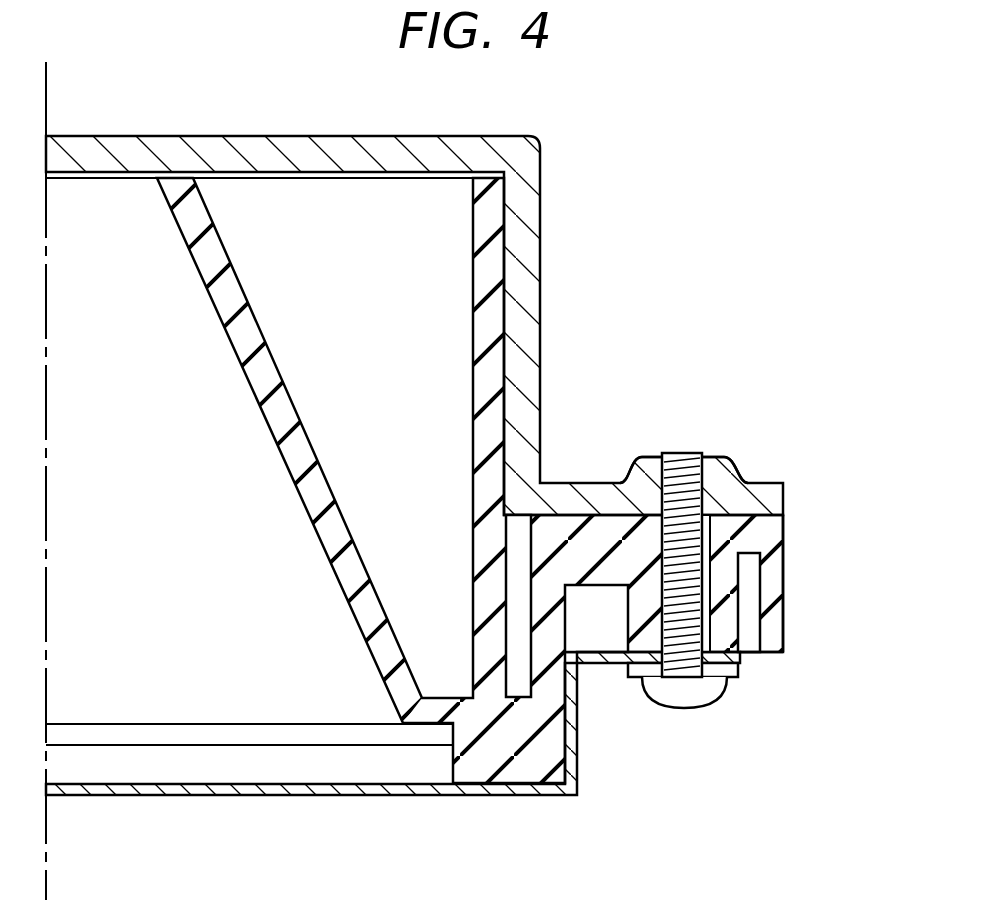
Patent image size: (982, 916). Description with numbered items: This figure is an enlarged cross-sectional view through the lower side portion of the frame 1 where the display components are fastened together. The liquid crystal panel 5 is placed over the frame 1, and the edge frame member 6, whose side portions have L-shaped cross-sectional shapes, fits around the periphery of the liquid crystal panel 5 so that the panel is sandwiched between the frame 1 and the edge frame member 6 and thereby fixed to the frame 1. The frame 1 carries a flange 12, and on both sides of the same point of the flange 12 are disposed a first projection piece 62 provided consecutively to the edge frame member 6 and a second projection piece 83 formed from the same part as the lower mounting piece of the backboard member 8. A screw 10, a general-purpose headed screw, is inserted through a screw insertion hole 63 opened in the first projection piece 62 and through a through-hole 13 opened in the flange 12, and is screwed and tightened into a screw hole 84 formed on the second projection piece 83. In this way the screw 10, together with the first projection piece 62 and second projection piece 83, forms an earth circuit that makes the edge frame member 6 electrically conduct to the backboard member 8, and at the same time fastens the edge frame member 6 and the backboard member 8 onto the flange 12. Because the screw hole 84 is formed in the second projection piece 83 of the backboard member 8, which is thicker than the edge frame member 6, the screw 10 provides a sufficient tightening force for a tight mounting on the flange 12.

The frame 1 is at (475, 476).
The liquid crystal panel 5 is at (298, 770).
The edge frame member 6 is at (478, 797).
The backboard member 8 is at (362, 158).
The screw 10 is at (688, 453).
The flange 12 is at (778, 537).
The through-hole 13 is at (697, 583).
The first projection piece 62 is at (738, 660).
The screw insertion hole 63 is at (665, 663).
The second projection piece 83 is at (770, 483).
The screw hole 84 is at (667, 458).